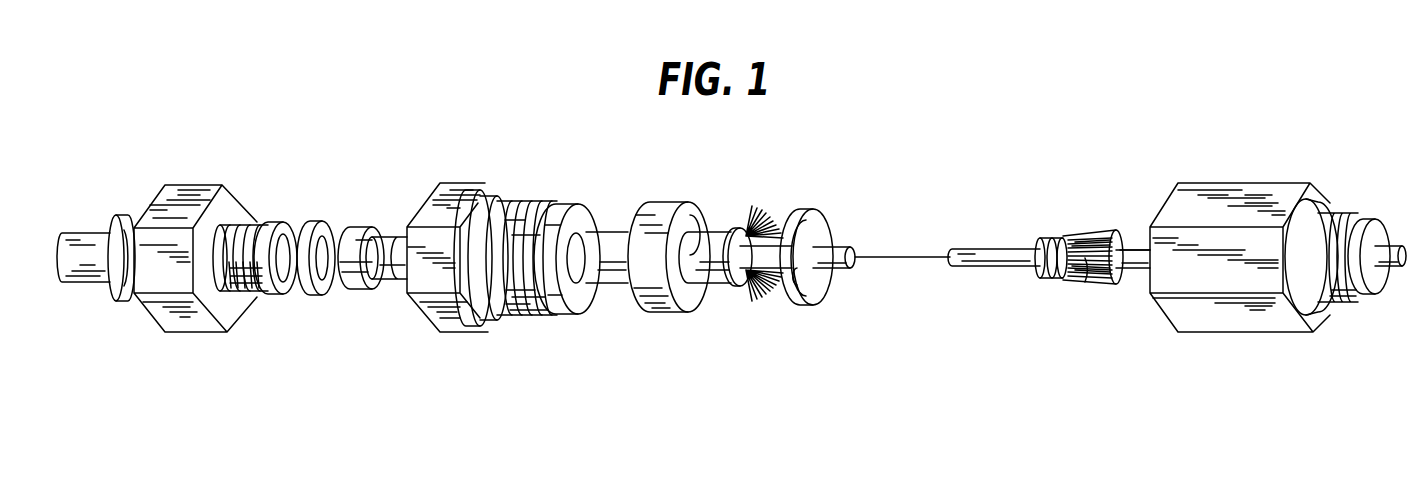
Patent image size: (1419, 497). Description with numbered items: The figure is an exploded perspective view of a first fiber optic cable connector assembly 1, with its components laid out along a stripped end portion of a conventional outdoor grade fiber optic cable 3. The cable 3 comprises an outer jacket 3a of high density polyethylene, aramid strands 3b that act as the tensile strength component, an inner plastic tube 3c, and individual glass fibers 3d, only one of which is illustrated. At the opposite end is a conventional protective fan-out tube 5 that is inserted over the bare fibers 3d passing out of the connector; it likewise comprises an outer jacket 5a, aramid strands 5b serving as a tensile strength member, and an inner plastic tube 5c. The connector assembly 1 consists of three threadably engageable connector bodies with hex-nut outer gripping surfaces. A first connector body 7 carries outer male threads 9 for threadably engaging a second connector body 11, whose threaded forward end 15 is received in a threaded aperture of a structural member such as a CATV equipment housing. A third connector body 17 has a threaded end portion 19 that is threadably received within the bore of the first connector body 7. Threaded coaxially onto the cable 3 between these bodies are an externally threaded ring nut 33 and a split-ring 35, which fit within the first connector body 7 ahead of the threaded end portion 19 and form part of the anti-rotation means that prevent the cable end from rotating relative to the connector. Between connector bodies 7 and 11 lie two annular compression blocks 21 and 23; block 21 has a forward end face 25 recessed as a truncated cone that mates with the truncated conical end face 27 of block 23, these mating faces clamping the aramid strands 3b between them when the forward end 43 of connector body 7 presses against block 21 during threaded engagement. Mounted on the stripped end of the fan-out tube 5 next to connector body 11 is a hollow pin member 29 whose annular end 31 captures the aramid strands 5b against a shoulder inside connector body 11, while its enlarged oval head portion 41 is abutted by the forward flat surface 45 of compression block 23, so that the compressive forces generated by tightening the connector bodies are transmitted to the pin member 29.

The connector assembly 1 is at (255, 118).
The fiber optic cable 3 is at (88, 232).
The outer jacket 3a is at (721, 285).
The aramid strands 3b is at (756, 292).
The inner plastic tube 3c is at (845, 270).
The glass fibers 3d is at (900, 254).
The fan-out tube 5 is at (1393, 244).
The outer jacket 5a is at (1140, 245).
The aramid strands 5b is at (1084, 281).
The inner plastic tube 5c is at (992, 248).
The first connector body 7 is at (477, 190).
The outer threads 9 is at (527, 316).
The second connector body 11 is at (1268, 186).
The forward end 15 is at (1374, 218).
The third connector body 17 is at (200, 332).
The threaded end portion 19 is at (279, 221).
The compression block 21 is at (664, 203).
The compression block 23 is at (822, 214).
The forward end face 25 is at (690, 226).
The truncated conical end face 27 is at (790, 298).
The pin member 29 is at (1073, 233).
The annular end 31 is at (1122, 281).
The ring nut 33 is at (318, 297).
The split-ring 35 is at (353, 227).
The head portion 41 is at (1038, 276).
The forward end 43 is at (568, 222).
The forward flat surface 45 is at (827, 231).